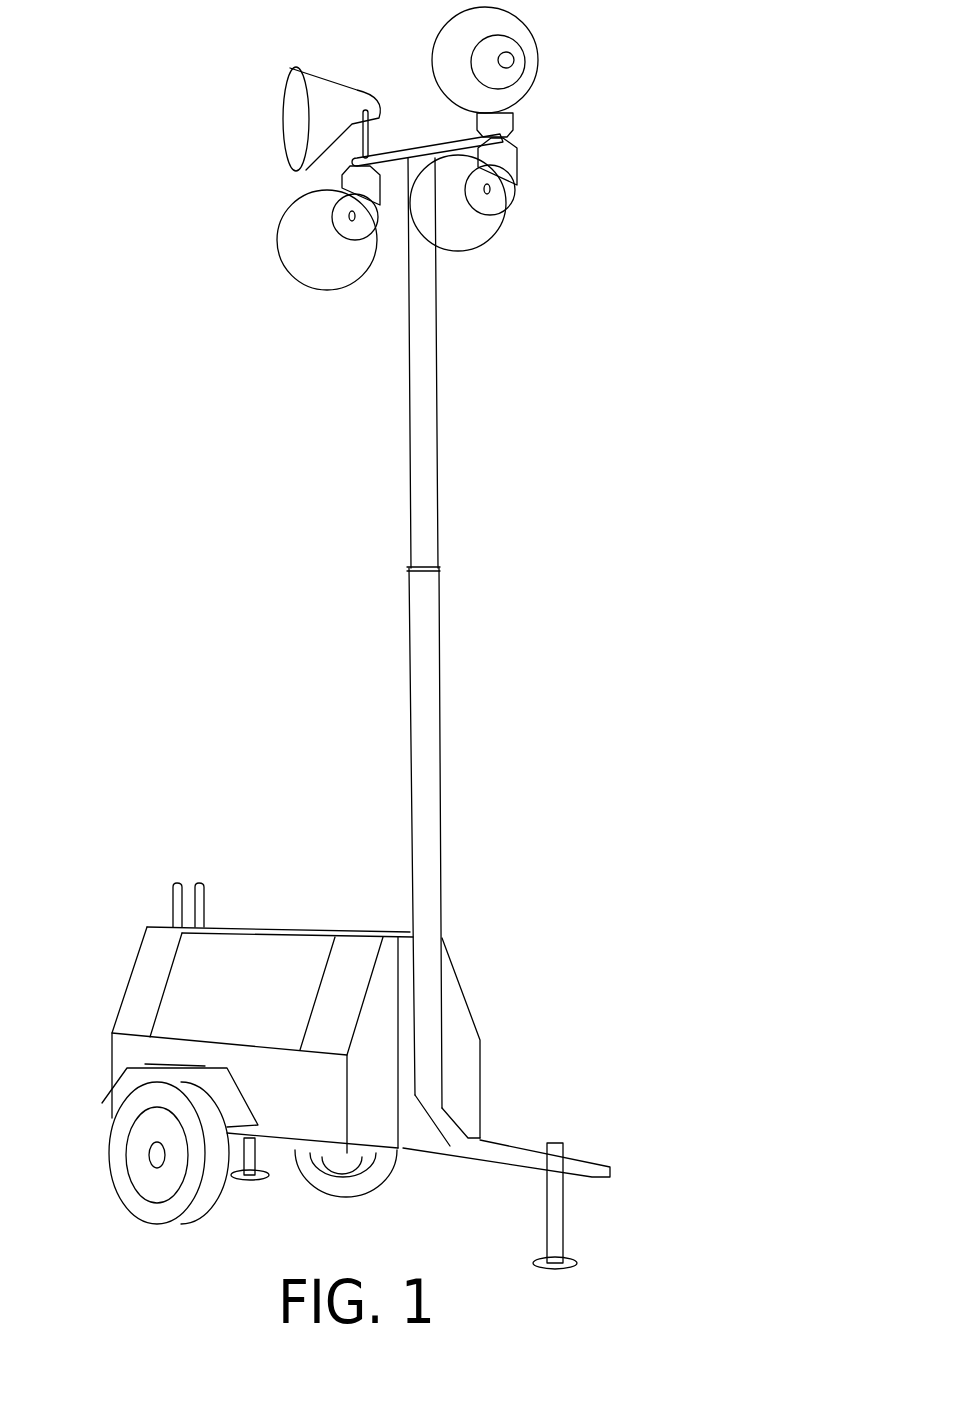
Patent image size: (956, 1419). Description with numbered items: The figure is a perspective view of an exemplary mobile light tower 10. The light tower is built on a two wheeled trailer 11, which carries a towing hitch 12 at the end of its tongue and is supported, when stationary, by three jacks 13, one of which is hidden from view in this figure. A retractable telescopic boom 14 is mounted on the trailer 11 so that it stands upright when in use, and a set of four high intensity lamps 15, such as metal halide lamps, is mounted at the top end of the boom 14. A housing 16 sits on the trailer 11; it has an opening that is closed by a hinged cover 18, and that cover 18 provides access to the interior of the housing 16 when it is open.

The mobile light tower 10 is at (206, 517).
The two wheeled trailer 11 is at (129, 1050).
The towing hitch 12 is at (608, 1165).
The jacks 13 is at (260, 1162).
The retractable telescopic boom 14 is at (437, 471).
The high intensity lamps 15 is at (540, 49).
The housing 16 is at (244, 1011).
The hinged cover 18 is at (268, 940).